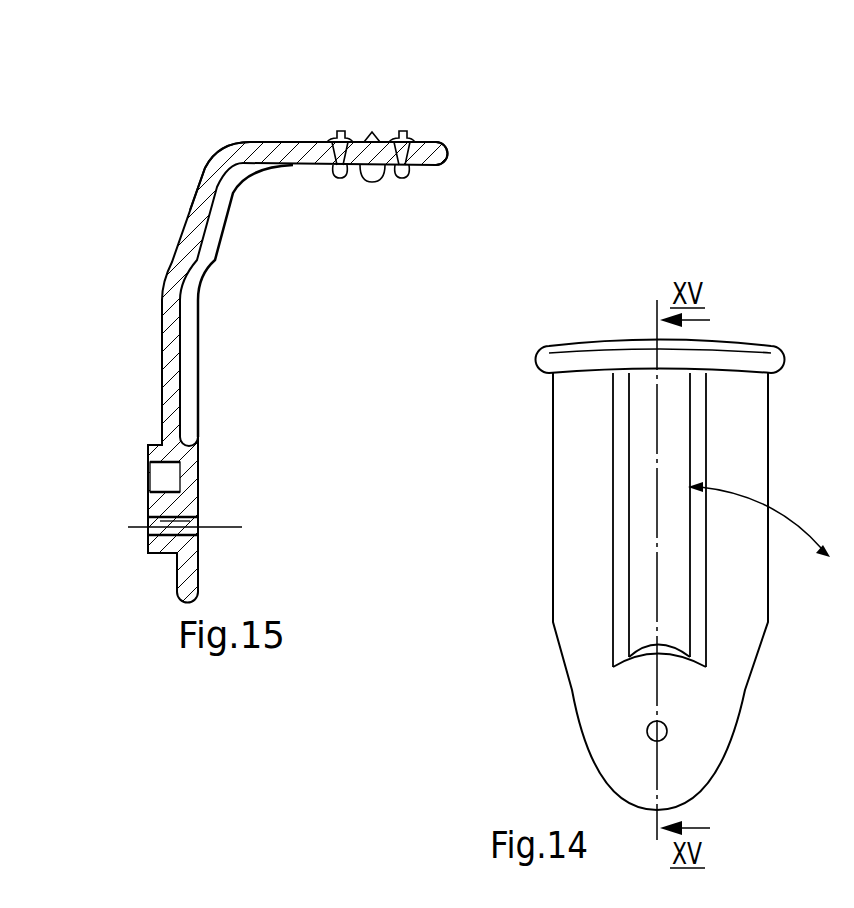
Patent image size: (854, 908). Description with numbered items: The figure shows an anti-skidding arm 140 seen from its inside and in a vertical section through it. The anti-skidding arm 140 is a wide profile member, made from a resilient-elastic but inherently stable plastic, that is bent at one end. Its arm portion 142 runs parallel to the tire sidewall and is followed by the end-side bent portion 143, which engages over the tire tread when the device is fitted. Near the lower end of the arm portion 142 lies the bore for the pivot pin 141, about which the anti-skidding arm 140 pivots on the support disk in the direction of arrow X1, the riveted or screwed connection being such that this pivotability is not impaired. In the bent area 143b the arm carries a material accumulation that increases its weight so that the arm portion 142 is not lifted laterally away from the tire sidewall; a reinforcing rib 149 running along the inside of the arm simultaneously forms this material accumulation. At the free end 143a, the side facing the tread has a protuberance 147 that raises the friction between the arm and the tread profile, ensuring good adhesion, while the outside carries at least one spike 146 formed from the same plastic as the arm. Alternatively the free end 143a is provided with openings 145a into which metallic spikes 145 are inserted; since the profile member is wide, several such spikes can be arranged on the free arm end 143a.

In FIG. 15, the anti-skidding arm 140 is at (190, 196).
In FIG. 14, the anti-skidding arm 140 is at (551, 486).
In FIG. 15, the pivot pin 141 is at (222, 527).
In FIG. 15, the arm portion 142 is at (168, 356).
In FIG. 15, the bent portion 143 is at (291, 150).
In FIG. 15, the free end of arm 143a is at (440, 160).
In FIG. 14, the free end of arm 143a is at (556, 367).
In FIG. 15, the bent area 143b is at (205, 162).
In FIG. 15, the rivet 145 is at (346, 130).
In FIG. 15, the opening 145a is at (338, 158).
In FIG. 15, the spike 146 is at (373, 140).
In FIG. 15, the protuberance 147 is at (377, 180).
In FIG. 15, the reinforcing rib 149 is at (200, 275).
In FIG. 14, the reinforcing rib 149 is at (622, 530).
In FIG. 14, the arrow X1 is at (793, 522).